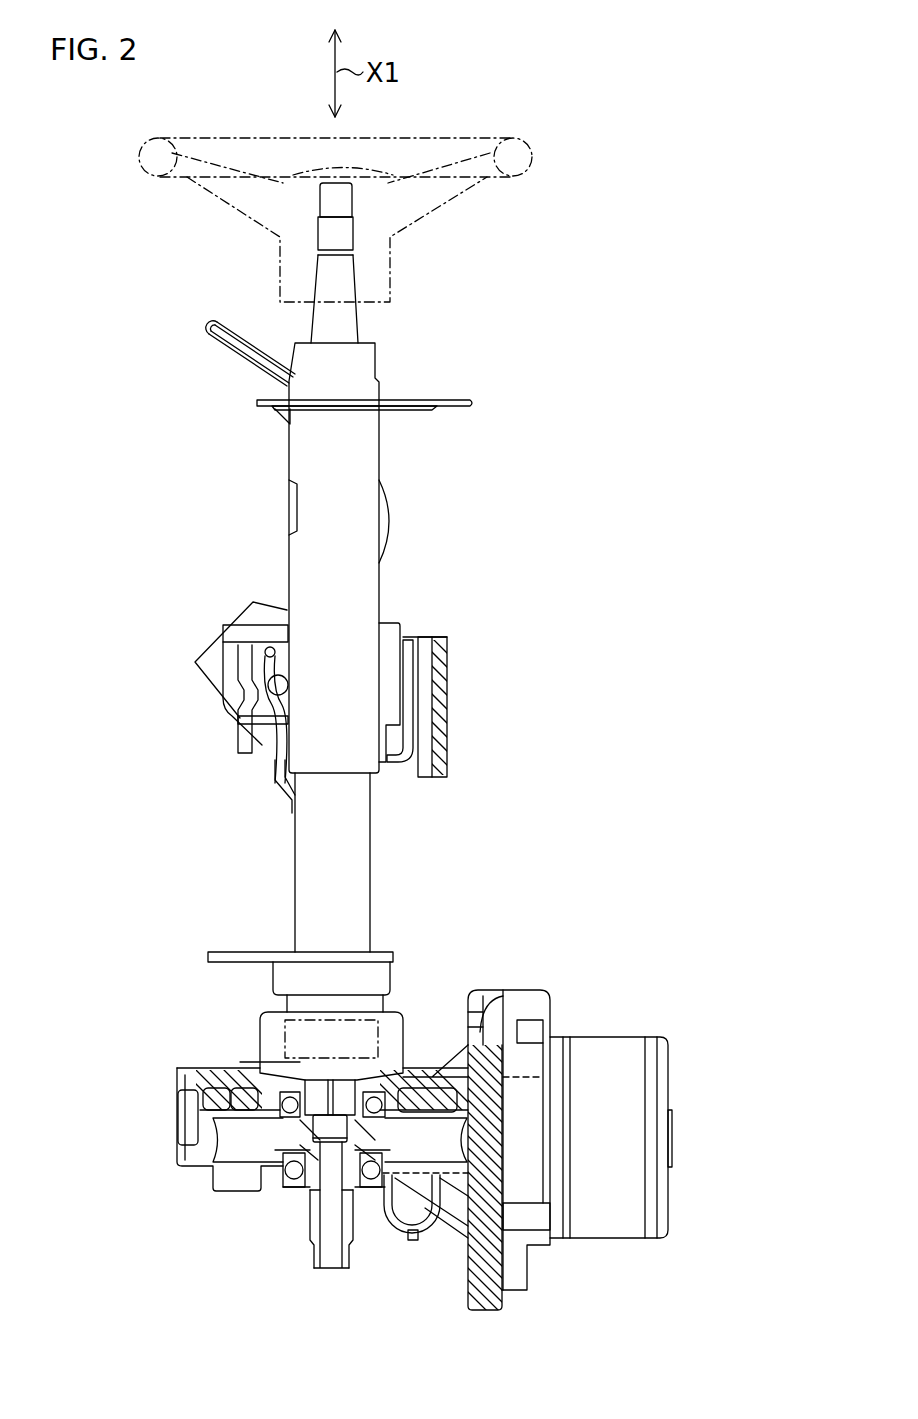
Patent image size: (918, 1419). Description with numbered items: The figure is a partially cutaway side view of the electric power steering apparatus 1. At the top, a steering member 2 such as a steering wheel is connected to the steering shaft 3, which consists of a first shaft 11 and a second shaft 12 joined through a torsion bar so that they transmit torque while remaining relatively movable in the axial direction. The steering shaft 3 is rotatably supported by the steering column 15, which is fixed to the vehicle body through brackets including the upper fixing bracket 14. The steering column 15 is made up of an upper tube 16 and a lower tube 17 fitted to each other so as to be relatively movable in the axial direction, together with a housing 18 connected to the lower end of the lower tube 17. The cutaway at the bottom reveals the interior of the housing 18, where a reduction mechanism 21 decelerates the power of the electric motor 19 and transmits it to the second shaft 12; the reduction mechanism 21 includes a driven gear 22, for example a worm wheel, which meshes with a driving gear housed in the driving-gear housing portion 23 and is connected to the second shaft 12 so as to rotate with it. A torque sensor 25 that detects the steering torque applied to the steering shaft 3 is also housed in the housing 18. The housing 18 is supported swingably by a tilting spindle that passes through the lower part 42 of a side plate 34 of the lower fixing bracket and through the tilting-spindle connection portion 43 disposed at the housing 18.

The electric power steering apparatus 1 is at (535, 327).
The steering member 2 is at (143, 144).
The steering shaft 3 is at (360, 323).
The first shaft 11 is at (347, 283).
The second shaft 12 is at (320, 1262).
The upper fixing bracket 14 is at (447, 660).
The steering column 15 is at (382, 443).
The upper tube 16 is at (307, 507).
The lower tube 17 is at (315, 850).
The housing 18 is at (259, 1044).
The electric motor 19 is at (674, 1207).
The reduction mechanism 21 is at (326, 1140).
The driven gear 22 is at (232, 1147).
The driving-gear housing portion 23 is at (187, 1123).
The torque sensor 25 is at (272, 1022).
The side plate 34 is at (414, 1248).
The lower part of side plate 42 is at (493, 1296).
The tilting-spindle connection portion 43 is at (418, 1224).